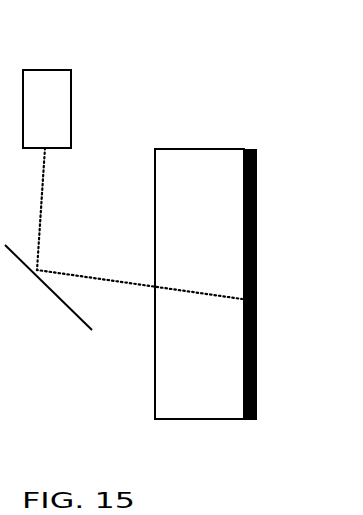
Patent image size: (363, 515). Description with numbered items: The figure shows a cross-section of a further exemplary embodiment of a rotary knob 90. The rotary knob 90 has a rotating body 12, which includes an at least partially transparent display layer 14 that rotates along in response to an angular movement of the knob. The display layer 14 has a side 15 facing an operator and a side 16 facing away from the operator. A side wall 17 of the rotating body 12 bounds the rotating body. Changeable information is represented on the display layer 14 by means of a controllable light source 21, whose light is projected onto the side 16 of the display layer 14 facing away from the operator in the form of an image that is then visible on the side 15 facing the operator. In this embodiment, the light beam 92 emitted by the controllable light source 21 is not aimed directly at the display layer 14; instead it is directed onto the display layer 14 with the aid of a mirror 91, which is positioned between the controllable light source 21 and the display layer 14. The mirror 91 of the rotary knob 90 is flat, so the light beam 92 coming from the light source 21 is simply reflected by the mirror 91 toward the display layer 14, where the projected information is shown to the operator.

The rotary knob 90 is at (251, 268).
The side wall of the rotating body 17 is at (180, 149).
The rotating body 12 is at (230, 162).
The display layer 14 is at (254, 240).
The side facing an operator 15 is at (257, 326).
The side facing away from the operator 16 is at (242, 406).
The controllable light source 21 is at (47, 78).
The light beam 92 is at (41, 197).
The mirror 91 is at (65, 302).